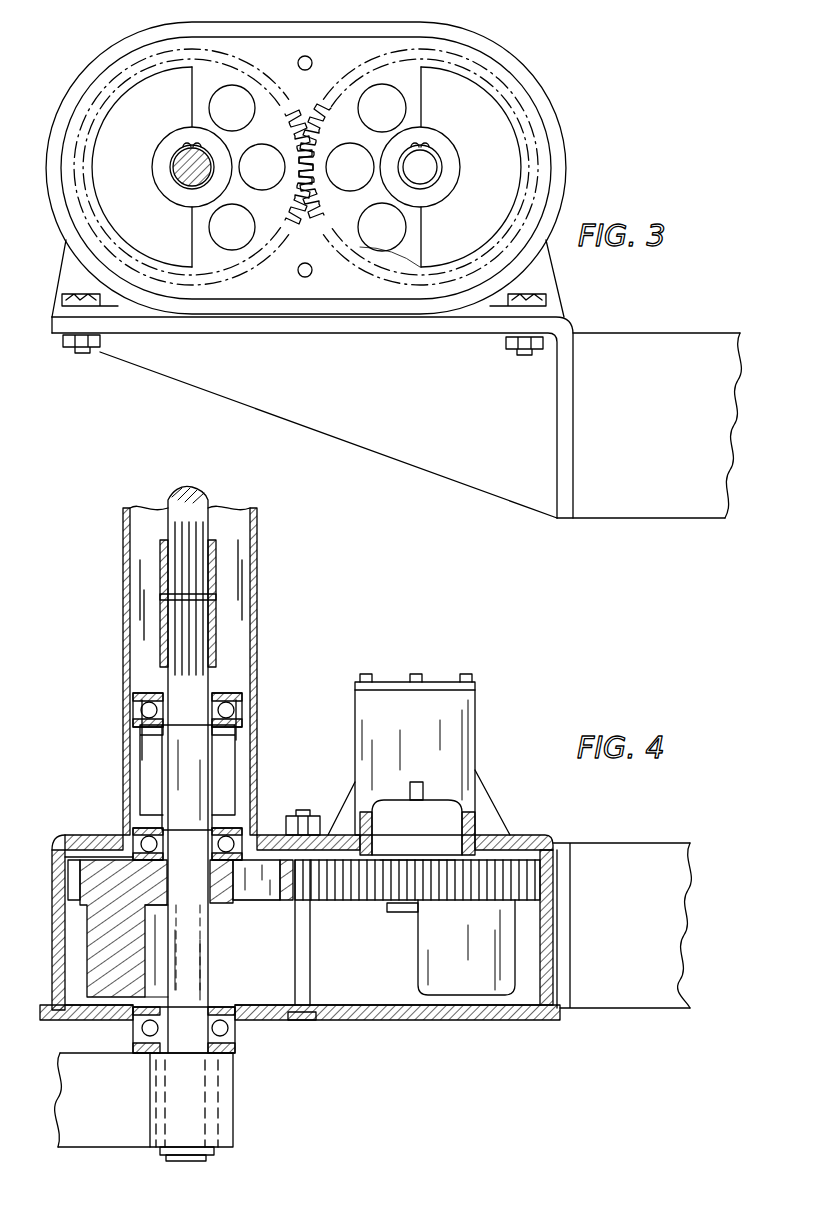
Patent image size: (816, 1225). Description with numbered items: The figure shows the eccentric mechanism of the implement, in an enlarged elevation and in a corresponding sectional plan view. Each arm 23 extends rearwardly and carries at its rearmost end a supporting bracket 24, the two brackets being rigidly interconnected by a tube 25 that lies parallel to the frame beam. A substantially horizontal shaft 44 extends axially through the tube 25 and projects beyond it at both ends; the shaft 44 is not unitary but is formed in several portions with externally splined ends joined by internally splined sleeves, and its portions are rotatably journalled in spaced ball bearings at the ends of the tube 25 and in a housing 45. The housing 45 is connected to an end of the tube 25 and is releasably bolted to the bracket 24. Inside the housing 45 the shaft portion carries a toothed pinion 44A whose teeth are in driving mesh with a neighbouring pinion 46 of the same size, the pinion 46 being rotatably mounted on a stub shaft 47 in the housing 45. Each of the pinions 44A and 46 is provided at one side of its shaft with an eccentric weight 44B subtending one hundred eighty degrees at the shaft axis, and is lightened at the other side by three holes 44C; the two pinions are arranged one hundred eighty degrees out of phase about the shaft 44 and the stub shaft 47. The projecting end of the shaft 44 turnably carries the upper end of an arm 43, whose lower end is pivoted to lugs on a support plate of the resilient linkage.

In FIG. 3, the arm 23 is at (619, 518).
In FIG. 4, the arm 23 is at (615, 1008).
In FIG. 3, the supporting bracket 24 is at (399, 466).
In FIG. 4, the tube 25 is at (256, 580).
In FIG. 4, the arm 43 is at (233, 1102).
In FIG. 3, the shaft 44 is at (186, 170).
In FIG. 4, the shaft 44 is at (210, 674).
In FIG. 3, the toothed pinion 44A is at (240, 66).
In FIG. 4, the toothed pinion 44A is at (98, 862).
In FIG. 3, the eccentric weight 44B is at (180, 268).
In FIG. 4, the eccentric weight 44B is at (420, 970).
In FIG. 3, the holes 44C is at (276, 145).
In FIG. 4, the holes 44C is at (254, 900).
In FIG. 3, the housing 45 is at (528, 84).
In FIG. 4, the housing 45 is at (540, 840).
In FIG. 3, the pinion 46 is at (412, 270).
In FIG. 4, the pinion 46 is at (362, 901).
In FIG. 3, the stub shaft 47 is at (430, 168).
In FIG. 4, the stub shaft 47 is at (405, 906).